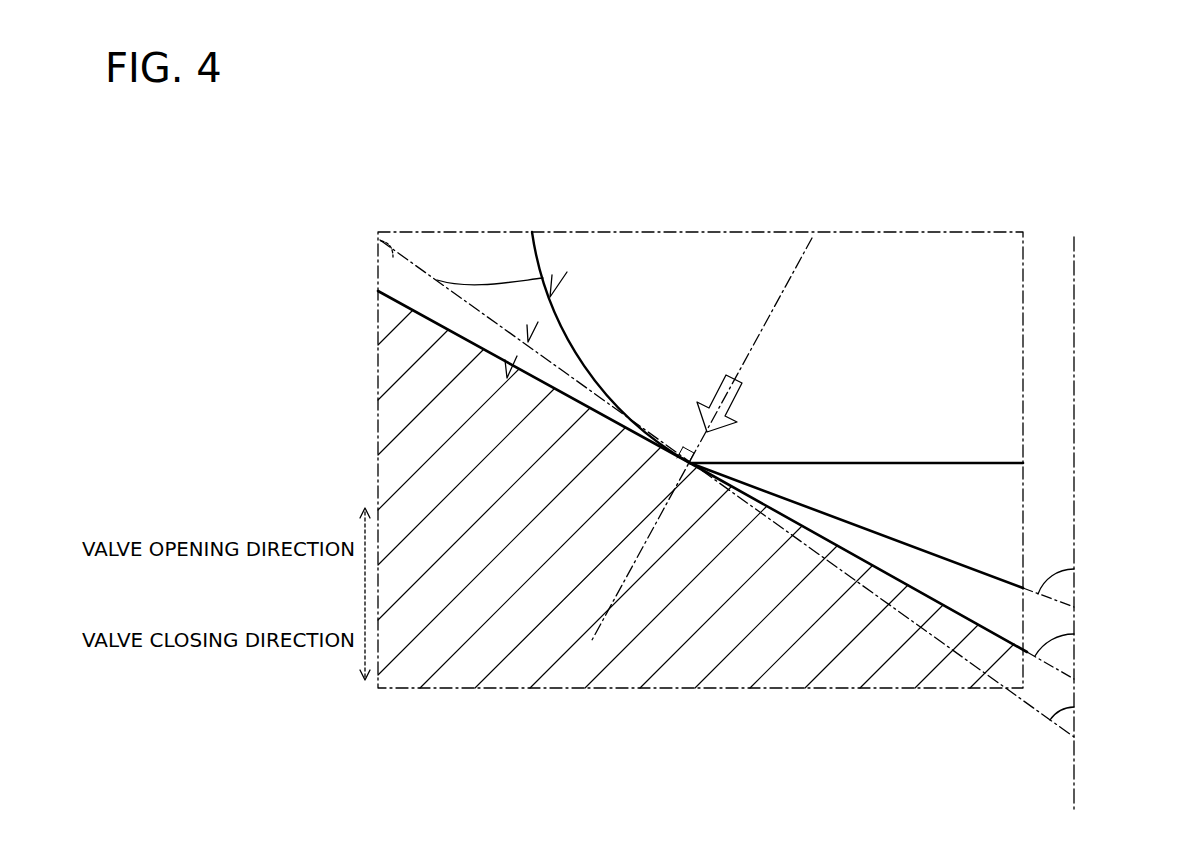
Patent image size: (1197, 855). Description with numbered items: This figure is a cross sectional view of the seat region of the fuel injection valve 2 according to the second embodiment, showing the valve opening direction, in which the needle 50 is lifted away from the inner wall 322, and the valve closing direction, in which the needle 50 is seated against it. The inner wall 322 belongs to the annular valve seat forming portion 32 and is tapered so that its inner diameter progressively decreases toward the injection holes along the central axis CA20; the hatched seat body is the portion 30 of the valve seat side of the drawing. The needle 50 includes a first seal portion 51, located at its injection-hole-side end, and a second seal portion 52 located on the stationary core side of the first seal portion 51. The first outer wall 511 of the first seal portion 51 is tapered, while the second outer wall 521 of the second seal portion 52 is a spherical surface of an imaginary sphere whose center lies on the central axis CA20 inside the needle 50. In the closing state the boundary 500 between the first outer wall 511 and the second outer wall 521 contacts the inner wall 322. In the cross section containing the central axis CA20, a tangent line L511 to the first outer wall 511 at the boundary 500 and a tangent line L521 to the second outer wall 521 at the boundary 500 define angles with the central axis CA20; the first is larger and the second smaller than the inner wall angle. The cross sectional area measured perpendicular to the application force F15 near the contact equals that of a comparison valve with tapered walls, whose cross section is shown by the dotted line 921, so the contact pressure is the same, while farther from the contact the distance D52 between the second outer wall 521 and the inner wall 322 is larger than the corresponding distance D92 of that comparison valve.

The fuel injection valve 2 is at (989, 214).
The seat member 30 is at (668, 481).
The valve seat forming portion 32 is at (405, 423).
The inner wall 322 is at (410, 312).
The needle 50 is at (668, 436).
The first seal portion 51 is at (942, 512).
The first outer wall 511 is at (848, 524).
The second seal portion 52 is at (892, 298).
The second outer wall 521 is at (437, 280).
The boundary 500 is at (768, 464).
The dotted line 921 is at (380, 258).
The distance D52 is at (545, 318).
The distance D92 is at (510, 365).
The application force F15 is at (708, 398).
The central axis CA20 is at (1075, 263).
The tangent line L511 is at (1034, 596).
The tangent line L521 is at (1048, 700).